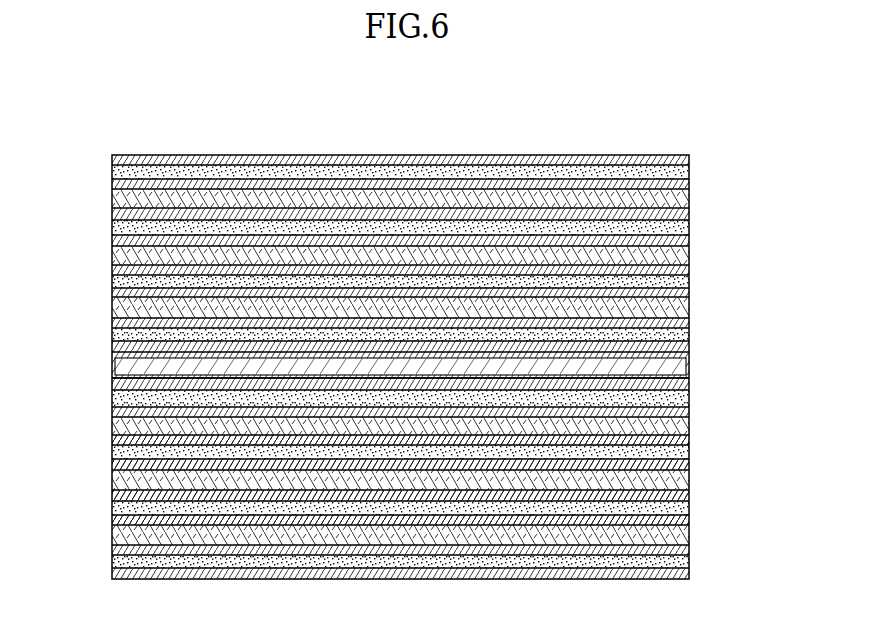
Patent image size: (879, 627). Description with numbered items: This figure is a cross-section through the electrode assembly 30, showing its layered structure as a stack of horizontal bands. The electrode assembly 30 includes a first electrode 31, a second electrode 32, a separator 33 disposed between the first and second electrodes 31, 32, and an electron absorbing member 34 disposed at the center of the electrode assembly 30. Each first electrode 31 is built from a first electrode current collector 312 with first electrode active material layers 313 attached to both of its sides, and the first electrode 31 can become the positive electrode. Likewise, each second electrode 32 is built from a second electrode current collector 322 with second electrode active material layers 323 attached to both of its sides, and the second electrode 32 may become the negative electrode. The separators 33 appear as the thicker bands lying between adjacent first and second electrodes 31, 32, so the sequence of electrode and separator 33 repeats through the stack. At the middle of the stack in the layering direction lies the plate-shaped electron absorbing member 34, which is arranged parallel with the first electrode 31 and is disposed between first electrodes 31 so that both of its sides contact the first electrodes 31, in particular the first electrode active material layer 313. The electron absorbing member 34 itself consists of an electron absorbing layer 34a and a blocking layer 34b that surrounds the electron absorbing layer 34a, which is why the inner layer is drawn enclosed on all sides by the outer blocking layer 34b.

The electrode assembly 30 is at (424, 105).
The first electrode 31 is at (402, 358).
The first electrode current collector 312 is at (122, 228).
The first electrode active material layer 313 is at (122, 216).
The second electrode 32 is at (445, 303).
The second electrode current collector 322 is at (679, 174).
The second electrode active material layer 323 is at (681, 160).
The separator 33 is at (679, 254).
The electron absorbing member 34 is at (413, 377).
The electron absorbing layer 34a is at (130, 366).
The blocking layer 34b is at (113, 379).